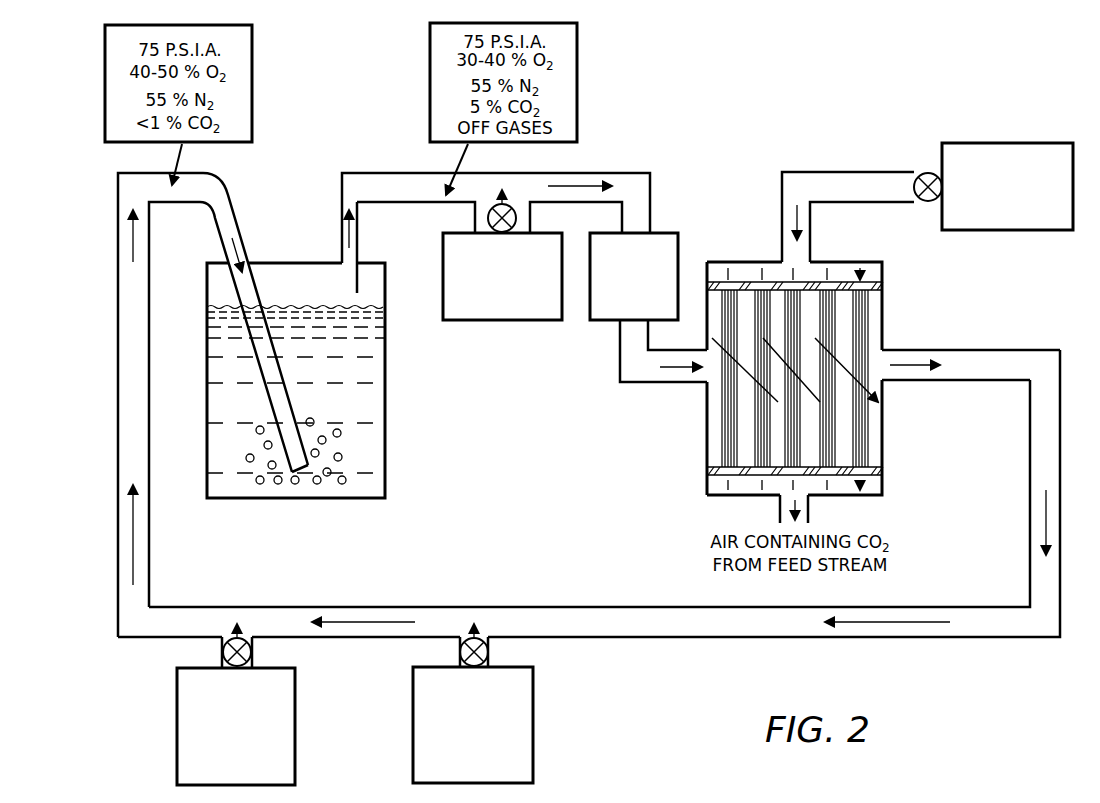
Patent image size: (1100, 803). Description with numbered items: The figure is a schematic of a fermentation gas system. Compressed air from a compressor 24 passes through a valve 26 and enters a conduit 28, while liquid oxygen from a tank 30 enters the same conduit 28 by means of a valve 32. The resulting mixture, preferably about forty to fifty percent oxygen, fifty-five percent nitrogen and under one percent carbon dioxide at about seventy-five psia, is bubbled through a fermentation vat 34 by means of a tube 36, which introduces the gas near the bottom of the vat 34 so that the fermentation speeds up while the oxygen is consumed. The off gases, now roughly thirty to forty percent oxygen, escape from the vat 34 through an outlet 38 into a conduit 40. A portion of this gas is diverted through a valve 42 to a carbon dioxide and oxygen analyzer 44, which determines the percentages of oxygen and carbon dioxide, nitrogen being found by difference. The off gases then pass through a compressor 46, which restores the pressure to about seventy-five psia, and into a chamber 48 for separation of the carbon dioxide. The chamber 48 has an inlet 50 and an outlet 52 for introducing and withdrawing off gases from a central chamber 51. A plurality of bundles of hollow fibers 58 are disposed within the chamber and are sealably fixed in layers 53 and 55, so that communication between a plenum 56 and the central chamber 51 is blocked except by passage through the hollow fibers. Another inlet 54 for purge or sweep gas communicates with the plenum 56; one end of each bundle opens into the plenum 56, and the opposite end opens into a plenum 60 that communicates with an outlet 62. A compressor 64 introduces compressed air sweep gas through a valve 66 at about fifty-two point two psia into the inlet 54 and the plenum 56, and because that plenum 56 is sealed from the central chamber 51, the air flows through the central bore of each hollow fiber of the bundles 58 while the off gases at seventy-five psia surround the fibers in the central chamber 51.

The compressor 24 is at (533, 725).
The valve 26 is at (490, 652).
The conduit 28 is at (430, 607).
The tank 30 is at (295, 725).
The valve 32 is at (254, 652).
The fermentation vat 34 is at (385, 365).
The tube 36 is at (286, 402).
The outlet 38 is at (344, 272).
The conduit 40 is at (368, 173).
The valve 42 is at (488, 218).
The carbon dioxide and oxygen analyzer 44 is at (515, 320).
The compressor 46 is at (668, 233).
The chamber 48 is at (800, 364).
The inlet 50 is at (707, 370).
The central chamber 51 is at (712, 440).
The outlet 52 is at (888, 355).
The layer 53 is at (882, 285).
The inlet 54 is at (806, 250).
The layer 55 is at (885, 467).
The plenum 56 is at (885, 268).
The bundles of hollow fibers 58 is at (862, 418).
The plenum 60 is at (875, 490).
The outlet 62 is at (810, 510).
The compressor 64 is at (1005, 143).
The valve 66 is at (918, 175).